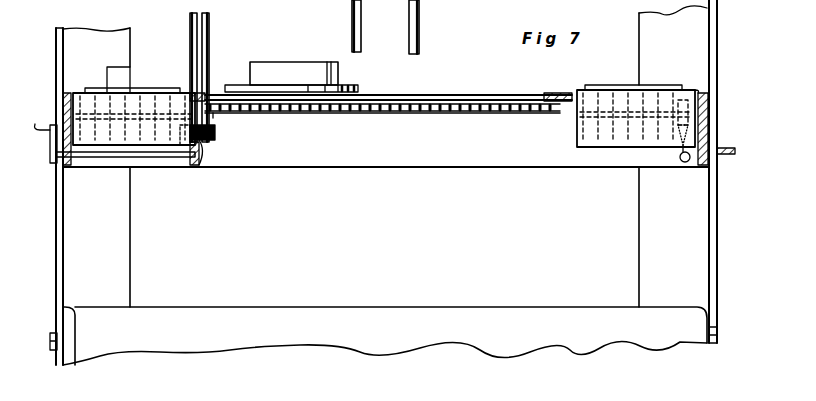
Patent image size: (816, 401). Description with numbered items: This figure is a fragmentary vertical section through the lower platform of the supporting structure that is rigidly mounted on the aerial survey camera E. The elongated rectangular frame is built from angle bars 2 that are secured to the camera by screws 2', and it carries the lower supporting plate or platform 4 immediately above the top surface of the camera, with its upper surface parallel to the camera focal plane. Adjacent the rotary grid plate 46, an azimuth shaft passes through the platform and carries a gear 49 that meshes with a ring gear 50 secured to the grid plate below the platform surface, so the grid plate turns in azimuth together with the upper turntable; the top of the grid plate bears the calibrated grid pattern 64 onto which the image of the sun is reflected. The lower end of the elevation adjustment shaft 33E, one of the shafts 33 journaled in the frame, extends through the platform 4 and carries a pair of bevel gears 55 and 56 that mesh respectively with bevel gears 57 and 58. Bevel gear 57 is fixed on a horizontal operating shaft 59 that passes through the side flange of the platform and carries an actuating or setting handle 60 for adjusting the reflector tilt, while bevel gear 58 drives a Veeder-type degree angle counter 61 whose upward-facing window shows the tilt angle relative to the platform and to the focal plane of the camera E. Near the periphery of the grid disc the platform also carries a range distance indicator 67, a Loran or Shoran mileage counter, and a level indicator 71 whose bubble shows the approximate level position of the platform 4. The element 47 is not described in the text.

The angle bars 2 is at (386, 182).
The screws 2' is at (365, 339).
The lower supporting plate or platform 4 is at (487, 157).
The vertical guide bar 33 is at (352, 35).
The elevation adjustment shaft 33E is at (209, 34).
The rotary grid plate 46 is at (406, 99).
The rail bottom plate 47 is at (562, 102).
The gear 49 is at (213, 116).
The ring gear 50 is at (442, 112).
The bevel gear 55 is at (220, 147).
The bevel gear 56 is at (217, 137).
The bevel gear 57 is at (200, 165).
The bevel gear 58 is at (193, 133).
The horizontal operating shaft 59 is at (88, 157).
The actuating or setting handle 60 is at (40, 122).
The degree angle counter 61 is at (143, 100).
The grid pattern 64 is at (472, 90).
The range distance indicator 67 is at (687, 97).
The level indicator 71 is at (285, 62).
The aerial survey camera E is at (357, 315).